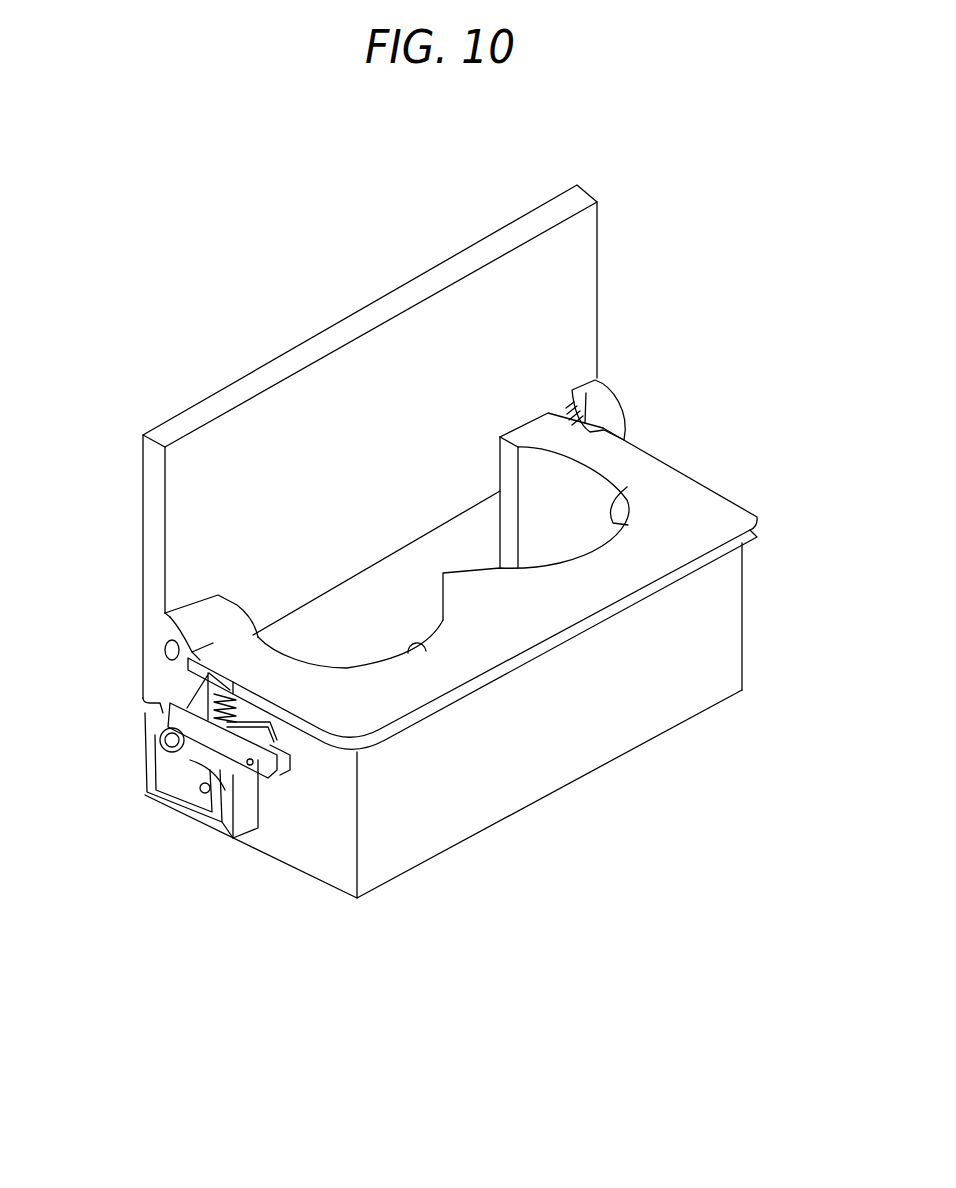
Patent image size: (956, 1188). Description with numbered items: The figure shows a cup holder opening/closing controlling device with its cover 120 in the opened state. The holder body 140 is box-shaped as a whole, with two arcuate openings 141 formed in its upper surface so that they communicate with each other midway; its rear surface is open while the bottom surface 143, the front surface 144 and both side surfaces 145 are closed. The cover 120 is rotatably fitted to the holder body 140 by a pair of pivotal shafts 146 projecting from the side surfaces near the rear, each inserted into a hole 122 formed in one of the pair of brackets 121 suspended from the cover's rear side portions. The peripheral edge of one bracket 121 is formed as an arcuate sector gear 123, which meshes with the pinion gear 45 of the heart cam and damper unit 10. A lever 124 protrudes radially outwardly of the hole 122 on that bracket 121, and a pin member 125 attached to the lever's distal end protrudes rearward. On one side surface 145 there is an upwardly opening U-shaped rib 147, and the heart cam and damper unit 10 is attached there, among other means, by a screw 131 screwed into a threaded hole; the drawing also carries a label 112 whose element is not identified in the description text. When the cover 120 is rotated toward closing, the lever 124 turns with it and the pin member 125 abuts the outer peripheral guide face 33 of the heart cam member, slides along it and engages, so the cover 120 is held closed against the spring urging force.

The heart cam and damper unit 10 is at (183, 793).
The outer peripheral guide face 33 is at (270, 733).
The pinion gear 45 is at (187, 783).
The top plate 112 is at (713, 507).
The cover 120 is at (587, 245).
The bracket 121 is at (600, 393).
The hole 122 is at (168, 641).
The sector gear 123 is at (230, 677).
The lever 124 is at (160, 688).
The pin member 125 is at (273, 768).
The screw 131 is at (210, 800).
The holder body 140 is at (492, 767).
The arcuate opening 141 is at (613, 487).
The bottom surface 143 is at (388, 652).
The front surface 144 is at (600, 748).
The side surface 145 is at (330, 873).
The pivotal shaft 146 is at (165, 652).
The U-shaped rib 147 is at (255, 837).